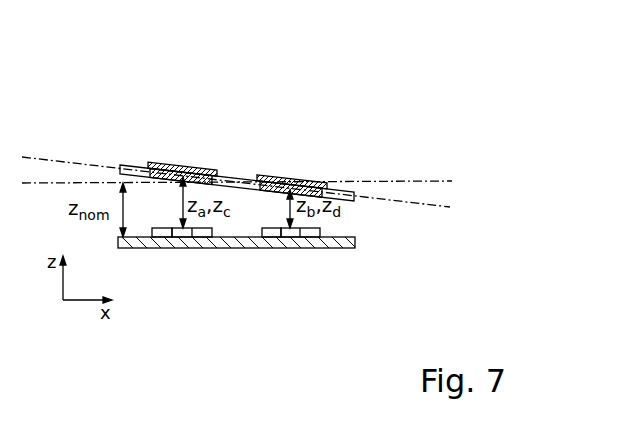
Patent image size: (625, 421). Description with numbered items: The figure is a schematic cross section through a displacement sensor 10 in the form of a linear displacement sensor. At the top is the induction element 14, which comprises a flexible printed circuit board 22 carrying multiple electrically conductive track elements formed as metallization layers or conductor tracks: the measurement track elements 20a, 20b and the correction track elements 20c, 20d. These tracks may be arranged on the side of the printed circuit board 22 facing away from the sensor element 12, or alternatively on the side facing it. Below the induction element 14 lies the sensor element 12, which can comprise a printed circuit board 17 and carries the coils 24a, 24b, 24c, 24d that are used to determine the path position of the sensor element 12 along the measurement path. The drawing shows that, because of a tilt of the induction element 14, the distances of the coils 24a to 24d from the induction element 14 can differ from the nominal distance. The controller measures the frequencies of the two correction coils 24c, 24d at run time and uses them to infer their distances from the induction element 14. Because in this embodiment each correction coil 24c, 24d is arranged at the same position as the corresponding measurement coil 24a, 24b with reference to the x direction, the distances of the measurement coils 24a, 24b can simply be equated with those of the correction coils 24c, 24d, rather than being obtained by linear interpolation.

The displacement sensor 10 is at (284, 121).
The sensor element 12 is at (279, 272).
The induction element 14 is at (375, 158).
The printed circuit board 17 is at (348, 248).
The measurement track element 20a is at (158, 162).
The measurement track element 20b is at (268, 175).
The correction track element 20c is at (183, 170).
The correction track element 20d is at (292, 183).
The printed circuit board 22 is at (132, 165).
The measurement coil 24a is at (160, 237).
The measurement coil 24b is at (267, 237).
The correction coil 24c is at (187, 237).
The correction coil 24d is at (292, 237).